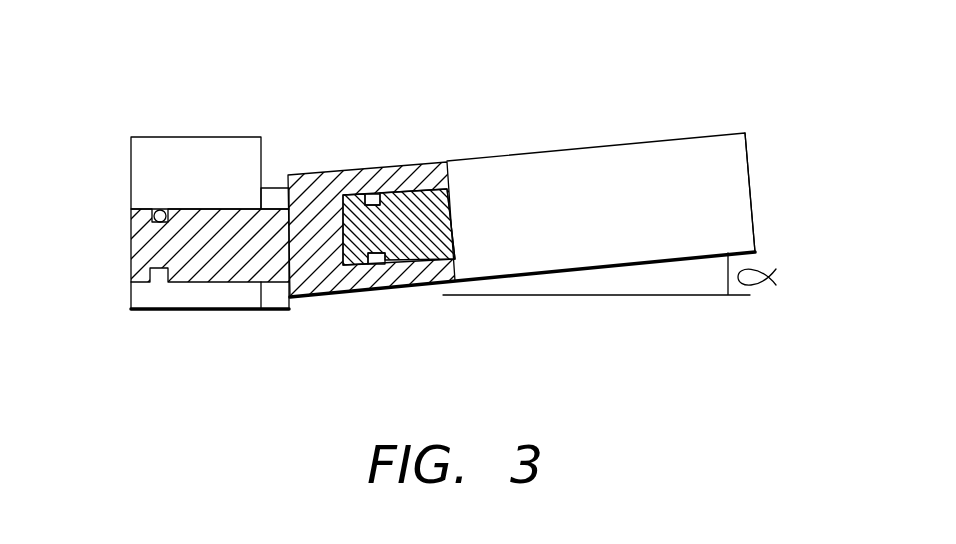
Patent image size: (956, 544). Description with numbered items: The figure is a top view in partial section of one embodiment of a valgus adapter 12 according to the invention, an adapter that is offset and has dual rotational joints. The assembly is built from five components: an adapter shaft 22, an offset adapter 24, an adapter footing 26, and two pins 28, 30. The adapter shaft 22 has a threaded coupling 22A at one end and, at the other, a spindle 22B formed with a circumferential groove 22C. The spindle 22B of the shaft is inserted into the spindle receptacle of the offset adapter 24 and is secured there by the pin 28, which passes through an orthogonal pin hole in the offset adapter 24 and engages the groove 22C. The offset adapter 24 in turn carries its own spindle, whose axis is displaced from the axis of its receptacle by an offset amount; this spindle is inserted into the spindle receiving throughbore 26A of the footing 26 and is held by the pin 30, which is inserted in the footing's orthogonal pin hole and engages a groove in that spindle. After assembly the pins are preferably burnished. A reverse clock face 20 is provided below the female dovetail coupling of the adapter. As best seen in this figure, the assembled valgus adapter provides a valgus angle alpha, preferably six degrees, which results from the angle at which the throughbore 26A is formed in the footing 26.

The assembly 12 is at (157, 346).
The reverse clock face 20 is at (130, 255).
The adapter shaft 22 is at (557, 190).
The threaded coupling 22A is at (752, 186).
The spindle 22B is at (420, 222).
The circumferential groove 22C is at (372, 204).
The offset adapter 24 is at (330, 172).
The adapter footing 26 is at (163, 158).
The spindle receiving throughbore 26A is at (163, 210).
The pin 28 is at (393, 288).
The pin 30 is at (156, 211).